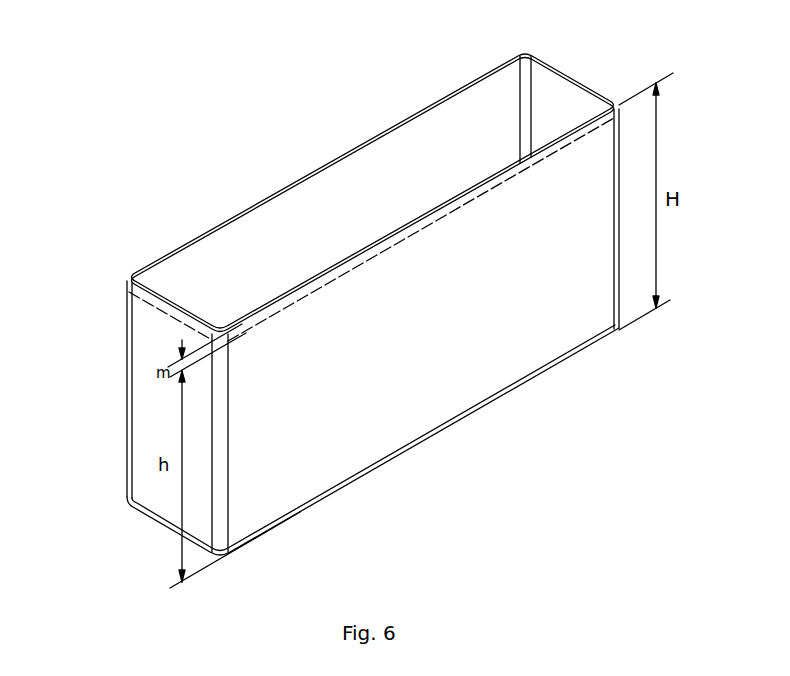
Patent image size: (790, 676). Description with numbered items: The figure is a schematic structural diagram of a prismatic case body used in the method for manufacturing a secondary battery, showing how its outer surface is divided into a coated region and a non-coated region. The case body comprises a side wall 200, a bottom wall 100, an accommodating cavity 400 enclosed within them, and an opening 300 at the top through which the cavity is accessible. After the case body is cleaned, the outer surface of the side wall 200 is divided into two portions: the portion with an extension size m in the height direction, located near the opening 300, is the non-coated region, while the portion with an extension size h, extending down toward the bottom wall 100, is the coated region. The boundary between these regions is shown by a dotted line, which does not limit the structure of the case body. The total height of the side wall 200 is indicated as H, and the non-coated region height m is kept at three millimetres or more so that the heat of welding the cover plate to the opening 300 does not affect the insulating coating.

The bottom wall 100 is at (462, 418).
The side wall 200 is at (140, 412).
The opening 300 is at (134, 279).
The accommodating cavity 400 is at (540, 100).